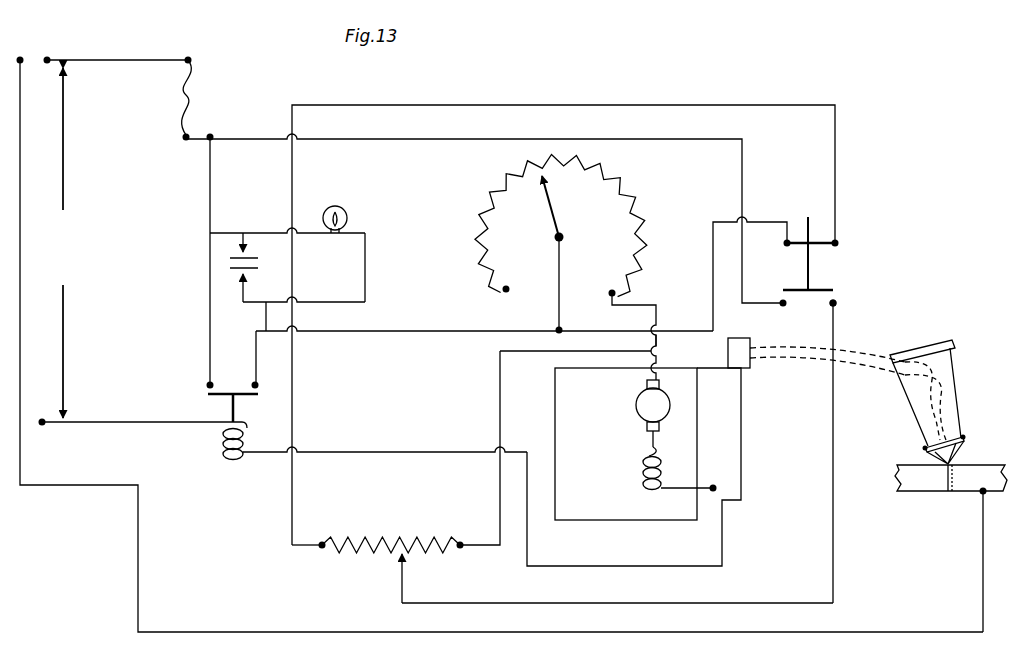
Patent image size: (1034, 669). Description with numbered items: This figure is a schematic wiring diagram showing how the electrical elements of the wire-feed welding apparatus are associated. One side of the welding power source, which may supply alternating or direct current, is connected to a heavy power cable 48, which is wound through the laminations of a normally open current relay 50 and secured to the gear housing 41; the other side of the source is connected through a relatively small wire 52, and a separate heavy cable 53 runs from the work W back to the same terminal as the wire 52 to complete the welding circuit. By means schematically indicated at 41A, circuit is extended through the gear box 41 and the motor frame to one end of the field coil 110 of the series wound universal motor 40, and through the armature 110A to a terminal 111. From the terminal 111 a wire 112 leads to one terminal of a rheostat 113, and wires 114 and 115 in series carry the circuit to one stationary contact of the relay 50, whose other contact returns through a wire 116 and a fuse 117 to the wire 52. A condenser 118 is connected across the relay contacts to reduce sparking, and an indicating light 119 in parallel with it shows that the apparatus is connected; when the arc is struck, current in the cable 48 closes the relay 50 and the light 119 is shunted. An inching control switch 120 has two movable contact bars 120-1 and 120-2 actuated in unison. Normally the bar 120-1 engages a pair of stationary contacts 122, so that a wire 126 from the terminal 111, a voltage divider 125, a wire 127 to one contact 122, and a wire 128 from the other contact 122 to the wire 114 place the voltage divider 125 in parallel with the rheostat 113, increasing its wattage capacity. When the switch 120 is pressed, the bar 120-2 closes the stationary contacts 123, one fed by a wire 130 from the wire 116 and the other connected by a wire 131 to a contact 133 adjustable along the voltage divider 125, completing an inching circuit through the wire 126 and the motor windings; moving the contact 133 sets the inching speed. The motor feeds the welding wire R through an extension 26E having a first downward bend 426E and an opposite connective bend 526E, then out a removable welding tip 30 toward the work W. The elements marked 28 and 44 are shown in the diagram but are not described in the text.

The wire 52 is at (117, 58).
The fuse 117 is at (177, 110).
The wire 116 is at (208, 306).
The condenser 118 is at (238, 242).
The indicating light 119 is at (340, 208).
The current relay 50 is at (226, 407).
The power cable 48 is at (118, 425).
The cable 53 is at (303, 633).
The wire 127 is at (545, 106).
The wire 130 is at (452, 140).
The rheostat 113 is at (624, 187).
The wire 114 is at (557, 284).
The wire 112 is at (630, 303).
The wire 115 is at (381, 331).
The wire 128 is at (712, 253).
The terminal 111 is at (660, 352).
The wire 126 is at (498, 380).
The motor 40 is at (566, 418).
The armature 110A is at (636, 397).
The field coil 110 is at (641, 462).
The connection means 41A is at (676, 492).
The gear housing 41 is at (738, 470).
The voltage divider 125 is at (366, 540).
The adjustable contact 133 is at (405, 602).
The wire 131 is at (833, 412).
The inching control switch 120 is at (797, 214).
The movable contact bar 120-1 is at (822, 246).
The movable contact bar 120-2 is at (832, 291).
The stationary contacts 122 is at (838, 243).
The stationary contacts 123 is at (782, 308).
The wire feed unit 44 is at (748, 360).
The first downward bend 426E is at (850, 364).
The connective bend 526E is at (858, 374).
The welding torch 28 is at (951, 364).
The extension 26E is at (955, 393).
The welding tip 30 is at (958, 425).
The welding wire R is at (956, 463).
The work W is at (921, 484).